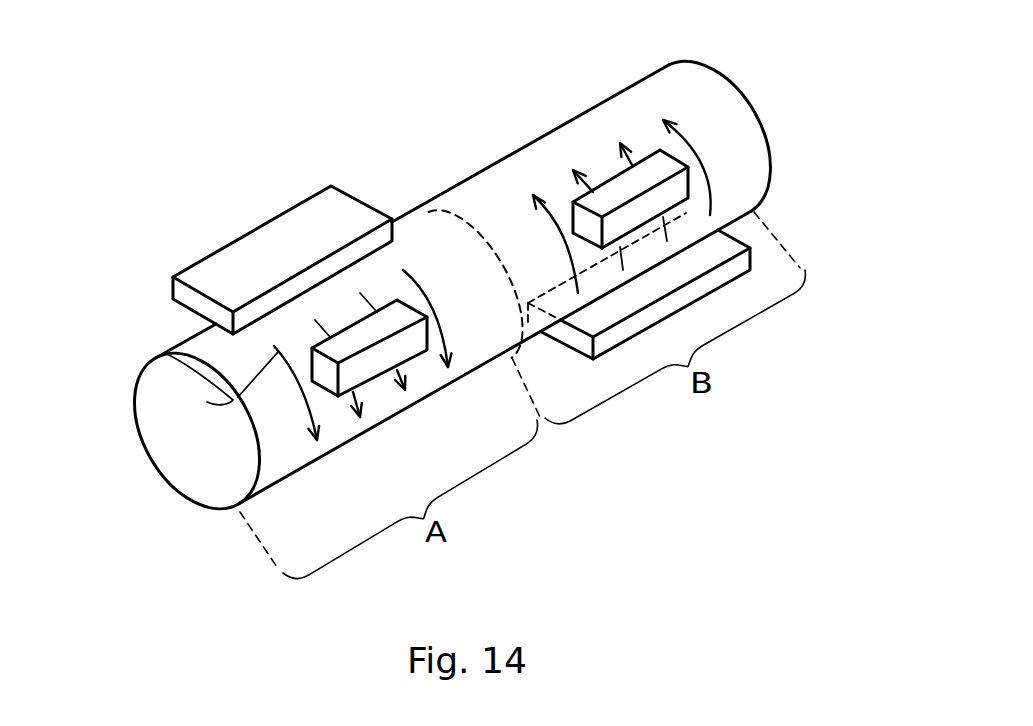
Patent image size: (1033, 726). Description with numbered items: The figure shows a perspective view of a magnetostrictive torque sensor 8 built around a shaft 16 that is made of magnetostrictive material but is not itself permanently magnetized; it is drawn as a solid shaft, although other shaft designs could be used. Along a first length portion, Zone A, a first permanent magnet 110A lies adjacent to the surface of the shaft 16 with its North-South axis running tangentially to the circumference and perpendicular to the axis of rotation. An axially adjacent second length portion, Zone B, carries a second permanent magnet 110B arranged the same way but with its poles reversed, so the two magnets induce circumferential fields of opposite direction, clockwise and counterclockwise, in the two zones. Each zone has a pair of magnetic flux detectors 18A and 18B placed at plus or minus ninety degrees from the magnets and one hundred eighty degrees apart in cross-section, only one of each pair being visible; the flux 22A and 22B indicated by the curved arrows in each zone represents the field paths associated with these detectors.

The magnetostrictive sensor 8 is at (340, 115).
The shaft 16 is at (758, 146).
The magnetic flux detector 18A is at (398, 315).
The magnetic flux detector 18B is at (688, 162).
The first magnetic flux 22A is at (165, 353).
The second magnetic flux 22B is at (553, 228).
The first permanent magnet 110A is at (263, 250).
The second permanent magnet 110B is at (745, 246).